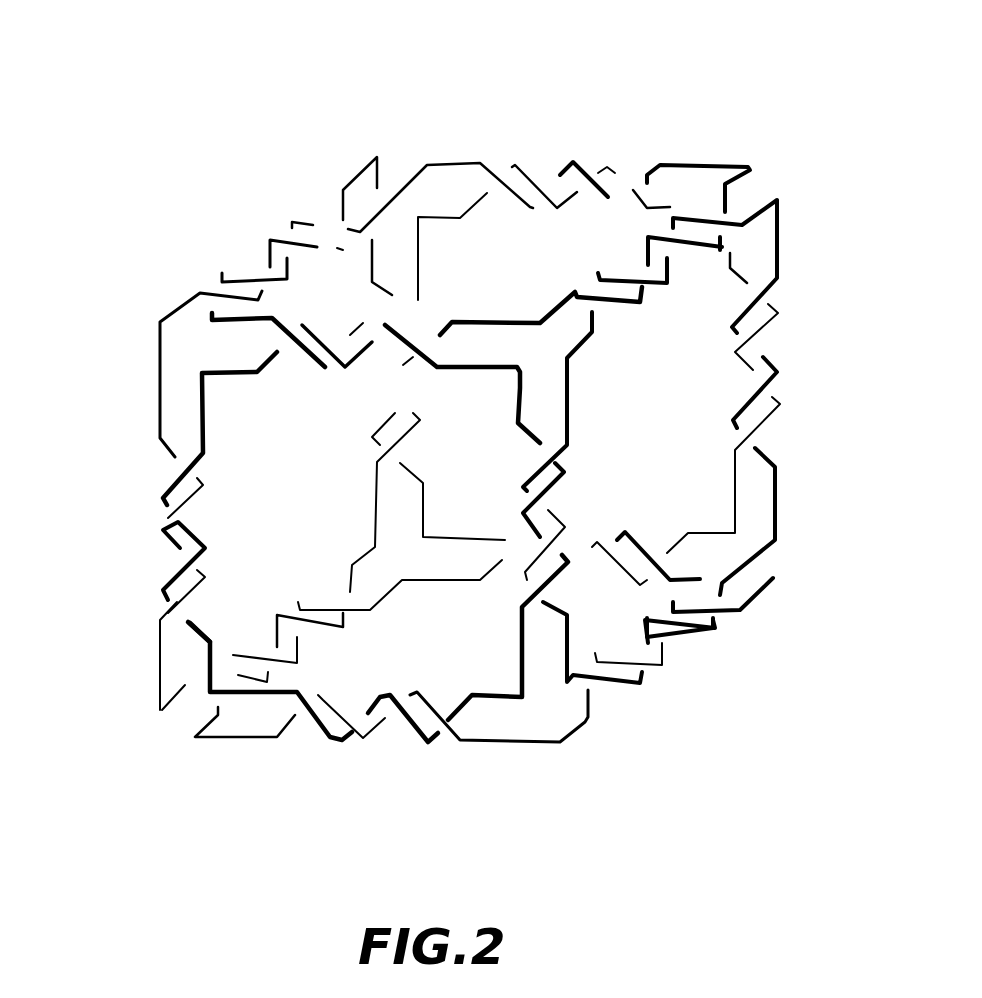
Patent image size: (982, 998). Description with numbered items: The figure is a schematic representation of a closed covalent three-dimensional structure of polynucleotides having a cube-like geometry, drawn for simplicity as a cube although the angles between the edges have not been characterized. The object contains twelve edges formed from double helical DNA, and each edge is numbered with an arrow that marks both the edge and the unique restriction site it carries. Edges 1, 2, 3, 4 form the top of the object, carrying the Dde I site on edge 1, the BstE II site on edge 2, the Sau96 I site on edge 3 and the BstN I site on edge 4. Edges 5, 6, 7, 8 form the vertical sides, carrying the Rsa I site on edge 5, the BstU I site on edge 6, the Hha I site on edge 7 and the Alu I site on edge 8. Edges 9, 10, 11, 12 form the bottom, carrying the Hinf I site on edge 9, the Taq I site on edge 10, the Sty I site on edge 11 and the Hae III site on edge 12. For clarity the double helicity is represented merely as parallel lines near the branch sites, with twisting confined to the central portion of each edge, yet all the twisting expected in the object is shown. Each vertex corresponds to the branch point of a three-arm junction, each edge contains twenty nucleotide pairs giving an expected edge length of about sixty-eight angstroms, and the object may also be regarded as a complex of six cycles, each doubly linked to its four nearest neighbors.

The edge 1 (Dde I restriction site) 1 is at (244, 267).
The edge 2 (BstE II restriction site) 2 is at (330, 302).
The edge 3 (Sau96 I restriction site) 3 is at (623, 263).
The edge 4 (BstN I restriction site) 4 is at (573, 153).
The edge 5 (Rsa I restriction site) 5 is at (163, 513).
The edge 6 (BstU I restriction site) 6 is at (567, 492).
The edge 7 (Hha I restriction site) 7 is at (783, 374).
The edge 8 (Alu I restriction site) 8 is at (367, 437).
The edge 9 (Hinf I restriction site) 9 is at (415, 748).
The edge 10 (Taq I restriction site) 10 is at (678, 643).
The edge 11 (Sty I restriction site) 11 is at (590, 575).
The edge 12 (Hae III restriction site) 12 is at (328, 637).